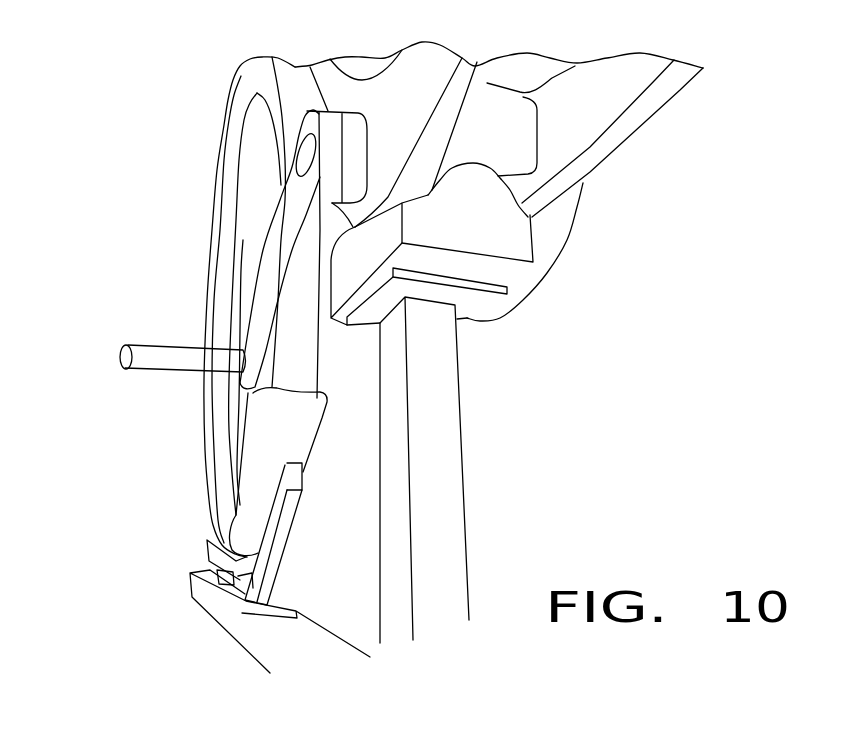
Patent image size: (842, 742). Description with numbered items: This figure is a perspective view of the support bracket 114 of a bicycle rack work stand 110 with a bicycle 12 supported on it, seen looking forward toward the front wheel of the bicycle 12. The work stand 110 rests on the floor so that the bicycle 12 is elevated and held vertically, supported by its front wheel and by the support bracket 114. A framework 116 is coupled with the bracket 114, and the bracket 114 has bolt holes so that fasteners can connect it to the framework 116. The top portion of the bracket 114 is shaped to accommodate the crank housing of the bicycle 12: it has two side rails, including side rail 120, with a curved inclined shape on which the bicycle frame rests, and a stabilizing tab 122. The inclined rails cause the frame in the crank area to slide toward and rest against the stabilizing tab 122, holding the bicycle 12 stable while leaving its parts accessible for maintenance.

The bicycle 12 is at (187, 237).
The bicycle rack work stand 110 is at (156, 533).
The support bracket 114 is at (477, 263).
The framework 116 is at (473, 450).
The side rail 120 is at (372, 247).
The stabilizing tab 122 is at (495, 217).